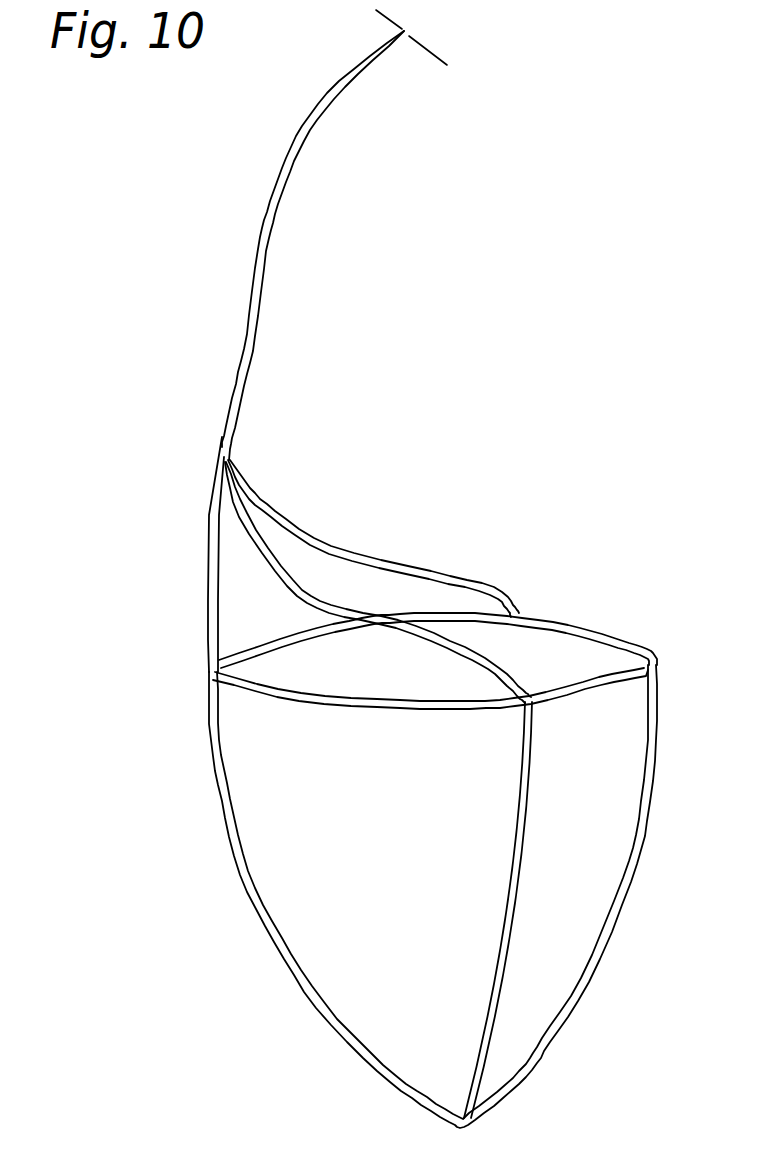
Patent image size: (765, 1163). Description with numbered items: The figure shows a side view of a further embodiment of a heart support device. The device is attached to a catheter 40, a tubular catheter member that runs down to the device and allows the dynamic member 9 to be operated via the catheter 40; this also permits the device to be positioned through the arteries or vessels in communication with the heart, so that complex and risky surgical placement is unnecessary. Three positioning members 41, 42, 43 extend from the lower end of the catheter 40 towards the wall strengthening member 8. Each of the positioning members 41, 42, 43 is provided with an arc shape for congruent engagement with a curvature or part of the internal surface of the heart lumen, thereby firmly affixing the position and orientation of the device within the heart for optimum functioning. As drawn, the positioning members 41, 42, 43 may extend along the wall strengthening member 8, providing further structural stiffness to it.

The wall strengthening member 8 is at (622, 818).
The dynamic member 9 is at (301, 677).
The catheter 40 is at (268, 212).
The positioning member 41 is at (364, 557).
The positioning member 42 is at (213, 567).
The positioning member 43 is at (448, 641).